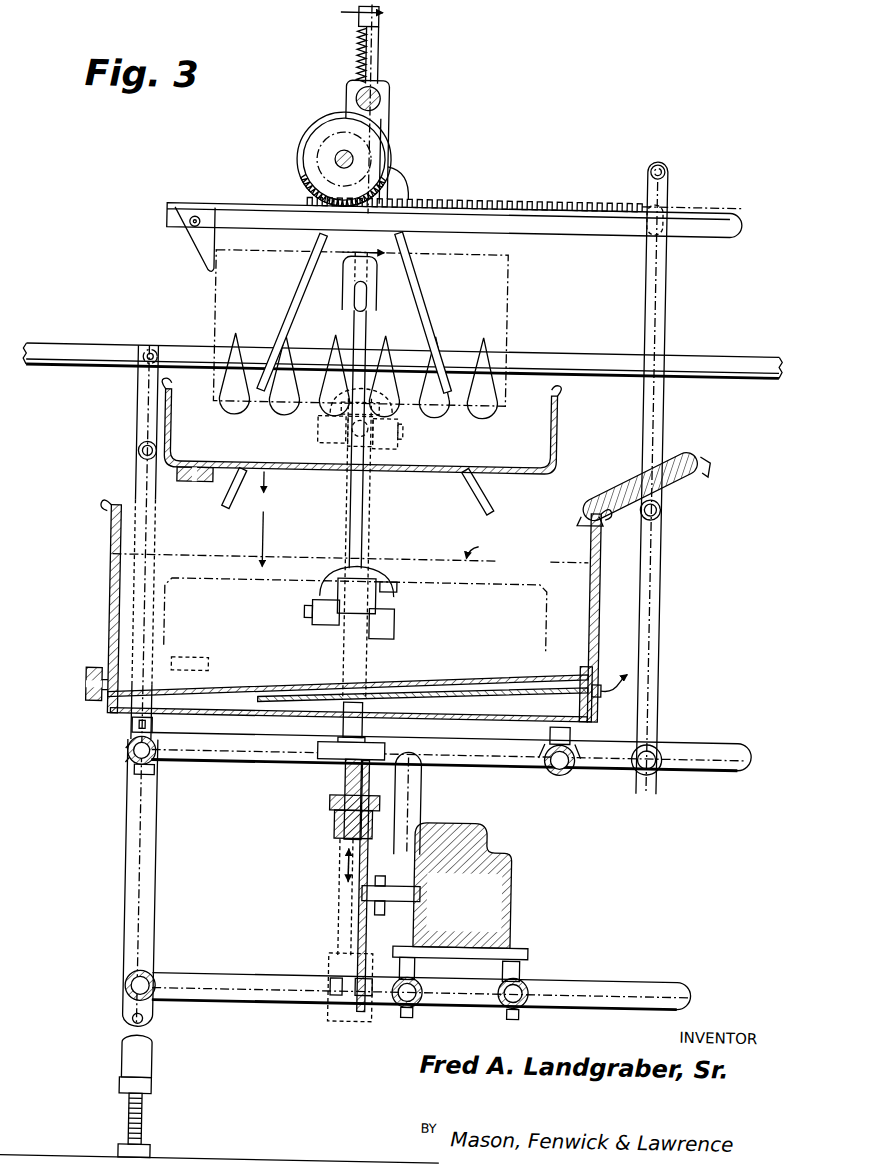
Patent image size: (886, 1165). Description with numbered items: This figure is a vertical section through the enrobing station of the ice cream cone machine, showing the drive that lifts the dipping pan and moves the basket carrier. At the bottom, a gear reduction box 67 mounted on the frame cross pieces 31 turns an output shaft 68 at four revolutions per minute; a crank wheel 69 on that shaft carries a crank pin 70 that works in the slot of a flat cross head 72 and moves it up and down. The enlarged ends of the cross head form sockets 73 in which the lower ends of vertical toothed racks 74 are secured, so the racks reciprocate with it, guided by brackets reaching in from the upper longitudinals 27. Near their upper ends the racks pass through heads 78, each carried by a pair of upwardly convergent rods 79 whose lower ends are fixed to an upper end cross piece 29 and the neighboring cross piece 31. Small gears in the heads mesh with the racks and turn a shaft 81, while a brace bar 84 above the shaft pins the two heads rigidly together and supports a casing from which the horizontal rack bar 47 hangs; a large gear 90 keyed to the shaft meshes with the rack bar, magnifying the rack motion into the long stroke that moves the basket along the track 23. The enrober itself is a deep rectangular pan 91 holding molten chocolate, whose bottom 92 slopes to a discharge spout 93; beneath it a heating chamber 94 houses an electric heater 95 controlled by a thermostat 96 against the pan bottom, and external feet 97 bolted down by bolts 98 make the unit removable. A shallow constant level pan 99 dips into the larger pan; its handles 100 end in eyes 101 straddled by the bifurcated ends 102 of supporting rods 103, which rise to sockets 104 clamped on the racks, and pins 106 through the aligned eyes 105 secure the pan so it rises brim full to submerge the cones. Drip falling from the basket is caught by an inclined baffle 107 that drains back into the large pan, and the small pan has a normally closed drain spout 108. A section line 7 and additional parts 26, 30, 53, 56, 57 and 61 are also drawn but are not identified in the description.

The section line 7- 7 is at (366, 134).
The track 23 is at (592, 350).
The leveling screw foot 26 is at (152, 1122).
The upper longitudinals 27 is at (270, 768).
The upper end cross piece 29 is at (138, 760).
The lower cross bar 30 is at (158, 981).
The cross pieces 31 is at (508, 1008).
The rack bar 47 is at (504, 204).
The pivot pin 53 is at (228, 212).
The top bar 56 is at (253, 220).
The bracket plate 57 is at (197, 252).
The carriage outline 61 is at (510, 304).
The gear reduction box 67 is at (500, 845).
The output shaft 68 is at (400, 888).
The crank wheel 69 is at (364, 927).
The crank pin 70 is at (335, 812).
The cross head 72 is at (340, 838).
The sockets 73 is at (340, 786).
The toothed racks 74 is at (369, 72).
The heads 78 is at (385, 141).
The upwardly convergent rods 79 is at (236, 476).
The shaft 81 is at (312, 177).
The brace bar 84 is at (346, 104).
The gear 90 is at (346, 162).
The deep rectangular pan 91 is at (600, 607).
The bottom 92 is at (299, 682).
The discharge spout 93 is at (108, 708).
The heating chamber 94 is at (240, 695).
The electric heater 95 is at (467, 704).
The thermostat 96 is at (508, 683).
The external feet 97 is at (134, 733).
The bolts 98 is at (158, 766).
The constant level pan 99 is at (552, 452).
The handles 100 is at (350, 442).
The eyes 101 is at (380, 442).
The bifurcated ends 102 is at (330, 412).
The supporting rods 103 is at (362, 332).
The sockets 104 is at (372, 300).
The eyes 105 is at (400, 433).
The pins 106 is at (316, 436).
The inclined baffle 107 is at (622, 480).
The drain spout 108 is at (203, 487).